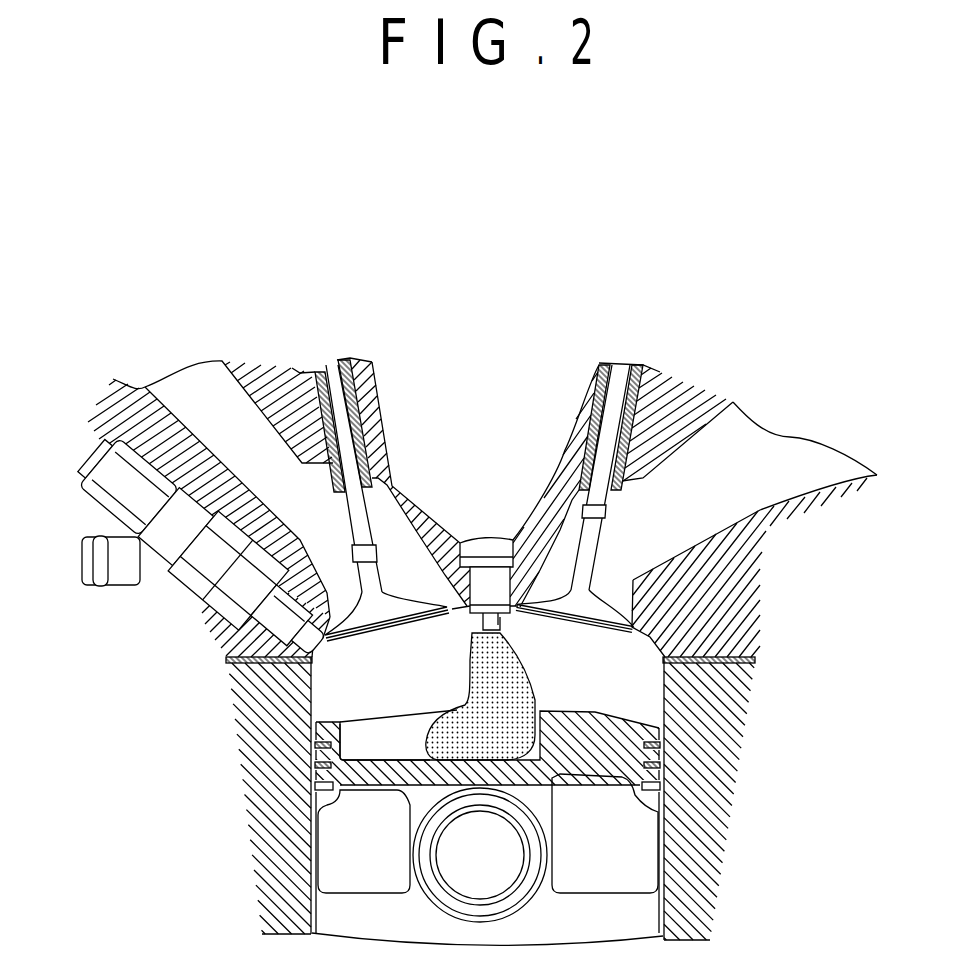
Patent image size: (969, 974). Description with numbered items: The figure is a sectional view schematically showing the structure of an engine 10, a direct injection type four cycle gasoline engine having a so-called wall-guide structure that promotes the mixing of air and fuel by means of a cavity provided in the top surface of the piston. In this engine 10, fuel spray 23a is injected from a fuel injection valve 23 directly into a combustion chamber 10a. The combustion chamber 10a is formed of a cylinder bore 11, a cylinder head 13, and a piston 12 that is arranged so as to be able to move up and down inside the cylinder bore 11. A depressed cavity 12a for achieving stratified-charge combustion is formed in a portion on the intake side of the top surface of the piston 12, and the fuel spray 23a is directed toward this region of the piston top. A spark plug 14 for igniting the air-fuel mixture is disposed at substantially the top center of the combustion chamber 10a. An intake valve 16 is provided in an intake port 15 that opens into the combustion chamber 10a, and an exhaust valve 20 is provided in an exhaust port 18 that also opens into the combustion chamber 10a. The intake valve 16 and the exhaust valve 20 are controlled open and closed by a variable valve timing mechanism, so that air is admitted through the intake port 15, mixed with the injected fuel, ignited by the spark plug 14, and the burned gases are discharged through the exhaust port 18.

The engine 10 is at (507, 321).
The combustion chamber 10a is at (580, 658).
The cylinder bore 11 is at (666, 688).
The piston 12 is at (548, 714).
The cavity 12a is at (378, 734).
The cylinder head 13 is at (460, 610).
The spark plug 14 is at (482, 583).
The intake port 15 is at (198, 368).
The intake valve 16 is at (342, 580).
The exhaust port 18 is at (770, 444).
The exhaust valve 20 is at (616, 588).
The fuel injection valve 23 is at (113, 517).
The fuel spray 23a is at (482, 673).